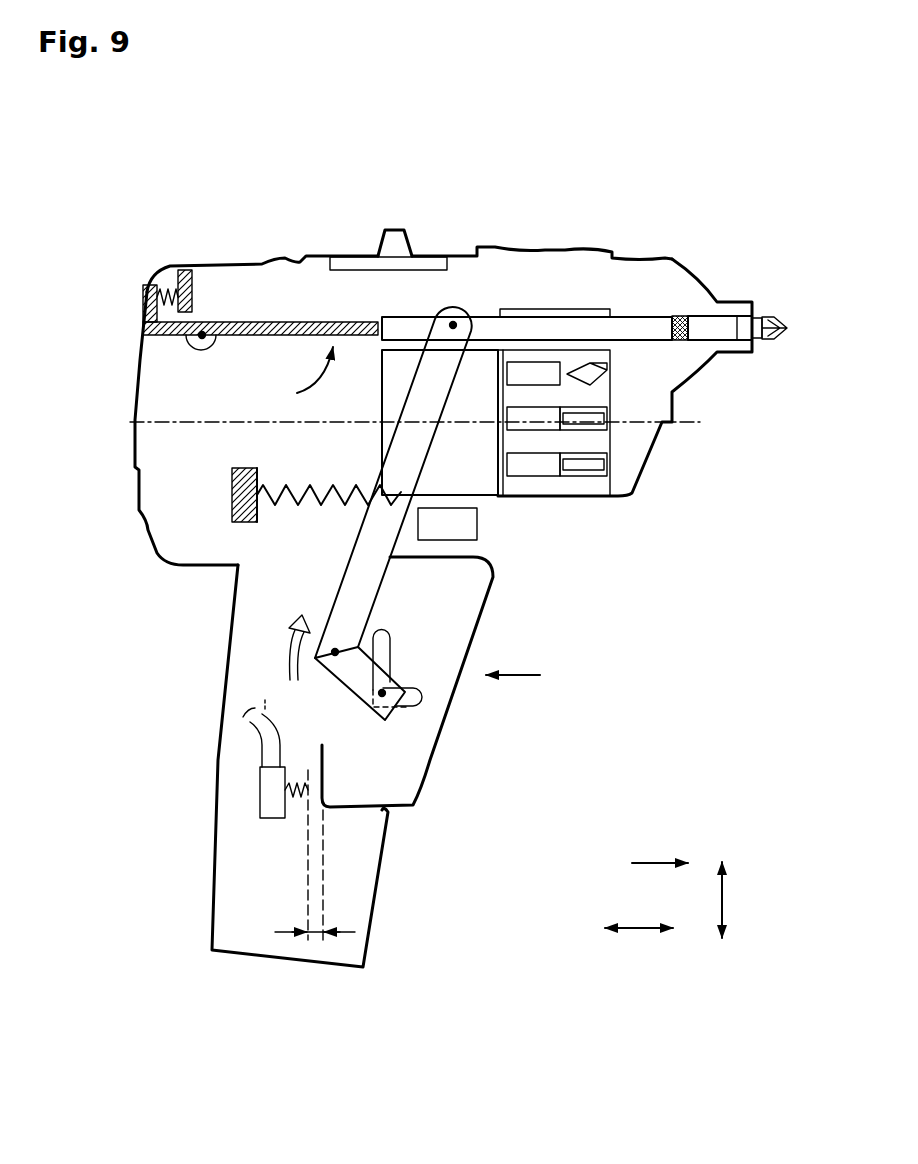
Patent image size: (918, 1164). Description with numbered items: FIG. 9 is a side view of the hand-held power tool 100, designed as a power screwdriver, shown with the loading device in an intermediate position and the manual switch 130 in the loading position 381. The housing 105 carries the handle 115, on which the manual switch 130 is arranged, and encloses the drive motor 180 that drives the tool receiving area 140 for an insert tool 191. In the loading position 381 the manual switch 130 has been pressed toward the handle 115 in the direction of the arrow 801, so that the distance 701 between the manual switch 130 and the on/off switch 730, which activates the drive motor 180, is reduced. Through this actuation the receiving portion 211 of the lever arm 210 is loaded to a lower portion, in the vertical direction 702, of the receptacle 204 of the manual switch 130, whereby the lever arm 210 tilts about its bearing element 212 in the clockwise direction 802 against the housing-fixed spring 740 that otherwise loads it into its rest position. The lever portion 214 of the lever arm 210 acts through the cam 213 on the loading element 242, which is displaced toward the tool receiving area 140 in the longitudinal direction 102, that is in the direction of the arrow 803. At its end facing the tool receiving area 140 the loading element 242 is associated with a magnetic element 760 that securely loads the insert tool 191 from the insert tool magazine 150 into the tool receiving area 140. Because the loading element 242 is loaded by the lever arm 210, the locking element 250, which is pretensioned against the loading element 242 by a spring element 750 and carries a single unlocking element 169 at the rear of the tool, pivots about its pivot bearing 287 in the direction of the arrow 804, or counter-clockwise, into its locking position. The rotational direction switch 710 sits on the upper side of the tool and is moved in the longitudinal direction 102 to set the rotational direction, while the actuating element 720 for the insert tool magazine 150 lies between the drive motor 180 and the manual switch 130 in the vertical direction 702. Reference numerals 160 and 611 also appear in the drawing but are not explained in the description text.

The hand-held power tool 100 is at (664, 106).
The longitudinal direction 102 is at (638, 930).
The housing 105 is at (593, 252).
The handle 115 is at (236, 750).
The manual switch 130 is at (440, 687).
The tool receiving area 140 is at (745, 292).
The insert tool magazine 150 is at (592, 512).
The housing upper part 160 is at (197, 228).
The unlocking element 169 is at (143, 310).
The drive motor 180 is at (463, 470).
The insert tool 191 is at (729, 332).
The receptacle 204 is at (440, 717).
The lever arm 210 is at (368, 575).
The receiving portion 211 is at (386, 697).
The bearing element 212 is at (320, 660).
The cam 213 is at (456, 320).
The lever portion 214 is at (491, 482).
The loading element 242 is at (558, 330).
The locking element 250 is at (258, 320).
The pivot point 287 is at (202, 338).
The loading position 381 is at (548, 726).
The guide 611 is at (388, 724).
The distance 701 is at (315, 934).
The vertical direction 702 is at (725, 900).
The rotational direction switch 710 is at (421, 256).
The actuating element 720 is at (457, 525).
The on/off switch 730 is at (258, 790).
The spring 740 is at (306, 502).
The spring element 750 is at (165, 285).
The magnetic element 760 is at (681, 316).
The arrow 801 is at (517, 672).
The clockwise direction 802 is at (285, 643).
The arrow 803 is at (652, 862).
The arrow 804 is at (299, 380).